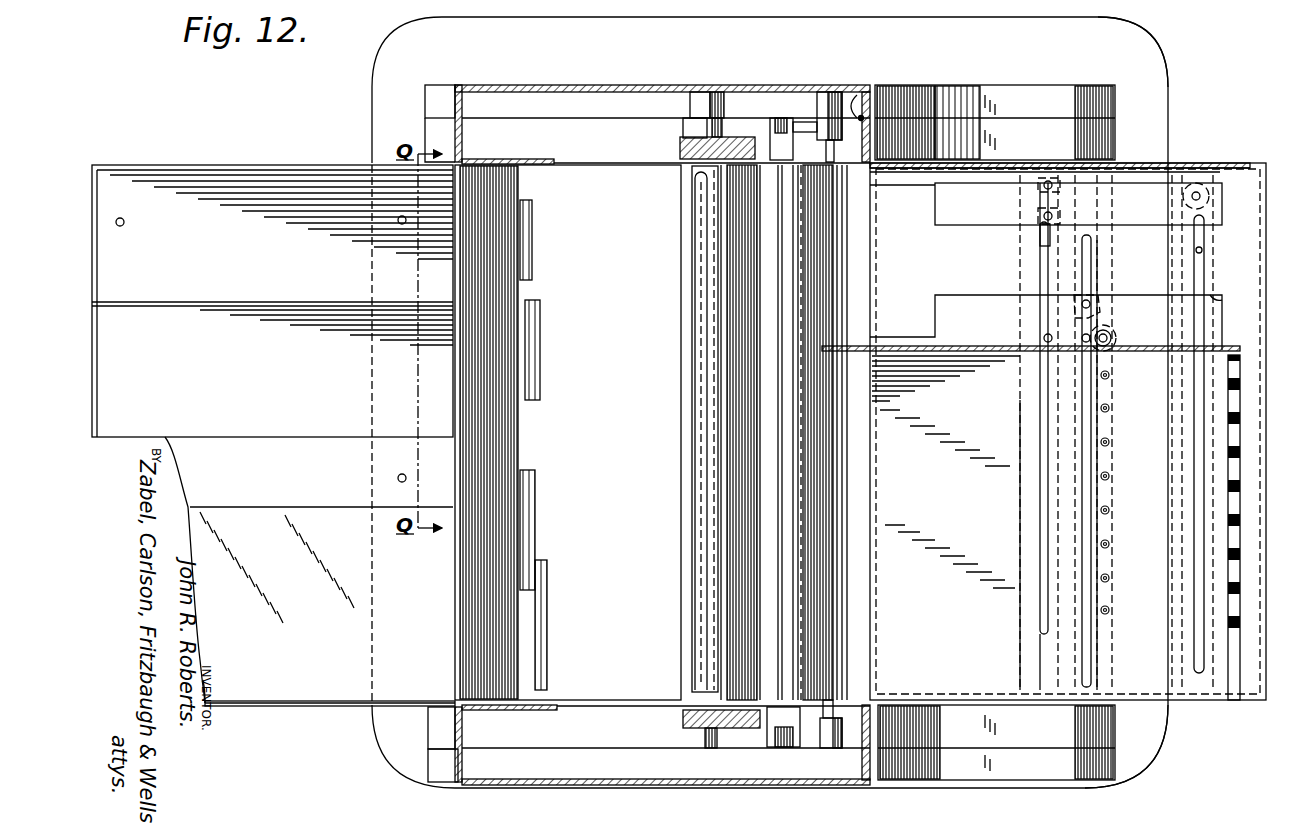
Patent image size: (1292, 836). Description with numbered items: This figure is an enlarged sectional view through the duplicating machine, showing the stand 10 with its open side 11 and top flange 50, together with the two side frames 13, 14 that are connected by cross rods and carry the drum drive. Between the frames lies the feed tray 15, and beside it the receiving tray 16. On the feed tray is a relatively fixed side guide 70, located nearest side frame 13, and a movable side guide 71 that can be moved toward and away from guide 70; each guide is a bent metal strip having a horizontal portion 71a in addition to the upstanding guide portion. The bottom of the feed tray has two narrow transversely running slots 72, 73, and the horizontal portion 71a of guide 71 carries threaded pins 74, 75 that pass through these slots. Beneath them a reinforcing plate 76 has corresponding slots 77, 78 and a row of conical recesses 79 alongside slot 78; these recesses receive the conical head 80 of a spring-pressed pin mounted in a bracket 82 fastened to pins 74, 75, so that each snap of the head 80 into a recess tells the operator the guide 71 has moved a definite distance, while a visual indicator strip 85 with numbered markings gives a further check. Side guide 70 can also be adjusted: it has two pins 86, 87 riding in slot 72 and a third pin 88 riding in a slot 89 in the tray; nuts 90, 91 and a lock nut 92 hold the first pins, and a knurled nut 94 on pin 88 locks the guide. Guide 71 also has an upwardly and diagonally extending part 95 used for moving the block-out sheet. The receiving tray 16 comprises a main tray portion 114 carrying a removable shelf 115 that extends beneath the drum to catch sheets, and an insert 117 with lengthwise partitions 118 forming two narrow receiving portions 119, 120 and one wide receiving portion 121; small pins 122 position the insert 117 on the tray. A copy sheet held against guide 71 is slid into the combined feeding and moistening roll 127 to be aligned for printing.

The stand 10 is at (1170, 62).
The open side of the stand 11 is at (1048, 792).
The side frame 13 is at (1050, 98).
The side frame 14 is at (906, 782).
The feed tray 15 is at (1255, 690).
The receiving tray 16 is at (292, 708).
The top flange of the stand 50 is at (1135, 52).
The fixed side guide 70 is at (1140, 177).
The movable side guide 71 is at (1222, 348).
The horizontal portion of the side guide 71a is at (1215, 210).
The slot 72 is at (1045, 490).
The slot 73 is at (1090, 538).
The threaded pin 74 is at (1043, 338).
The threaded pin 75 is at (1093, 304).
The reinforcing plate 76 is at (1020, 570).
The slot in plate 77 is at (1045, 418).
The slot in plate 78 is at (1080, 465).
The conical recesses 79 is at (1112, 374).
The conical head 80 is at (1110, 333).
The bracket 82 is at (1116, 341).
The visual indicator strip 85 is at (1240, 362).
The pin 86 is at (1042, 216).
The pin 87 is at (1042, 185).
The pin 88 is at (1202, 196).
The slot 89 is at (1203, 250).
The nut 90 is at (1042, 226).
The nut 91 is at (1040, 196).
The lock nut 92 is at (858, 95).
The knurled nut 94 is at (1215, 168).
The upwardly and diagonally extending part 95 is at (940, 348).
The main tray portion 114 is at (332, 692).
The removable ledge or shelf 115 is at (462, 577).
The insert 117 is at (268, 510).
The partitions 118 is at (312, 302).
The narrow receiving portion 119 is at (207, 176).
The narrow receiving portion 120 is at (262, 318).
The wide receiving portion 121 is at (248, 667).
The small pins 122 is at (124, 220).
The feeding and moistening roll 127 is at (782, 648).